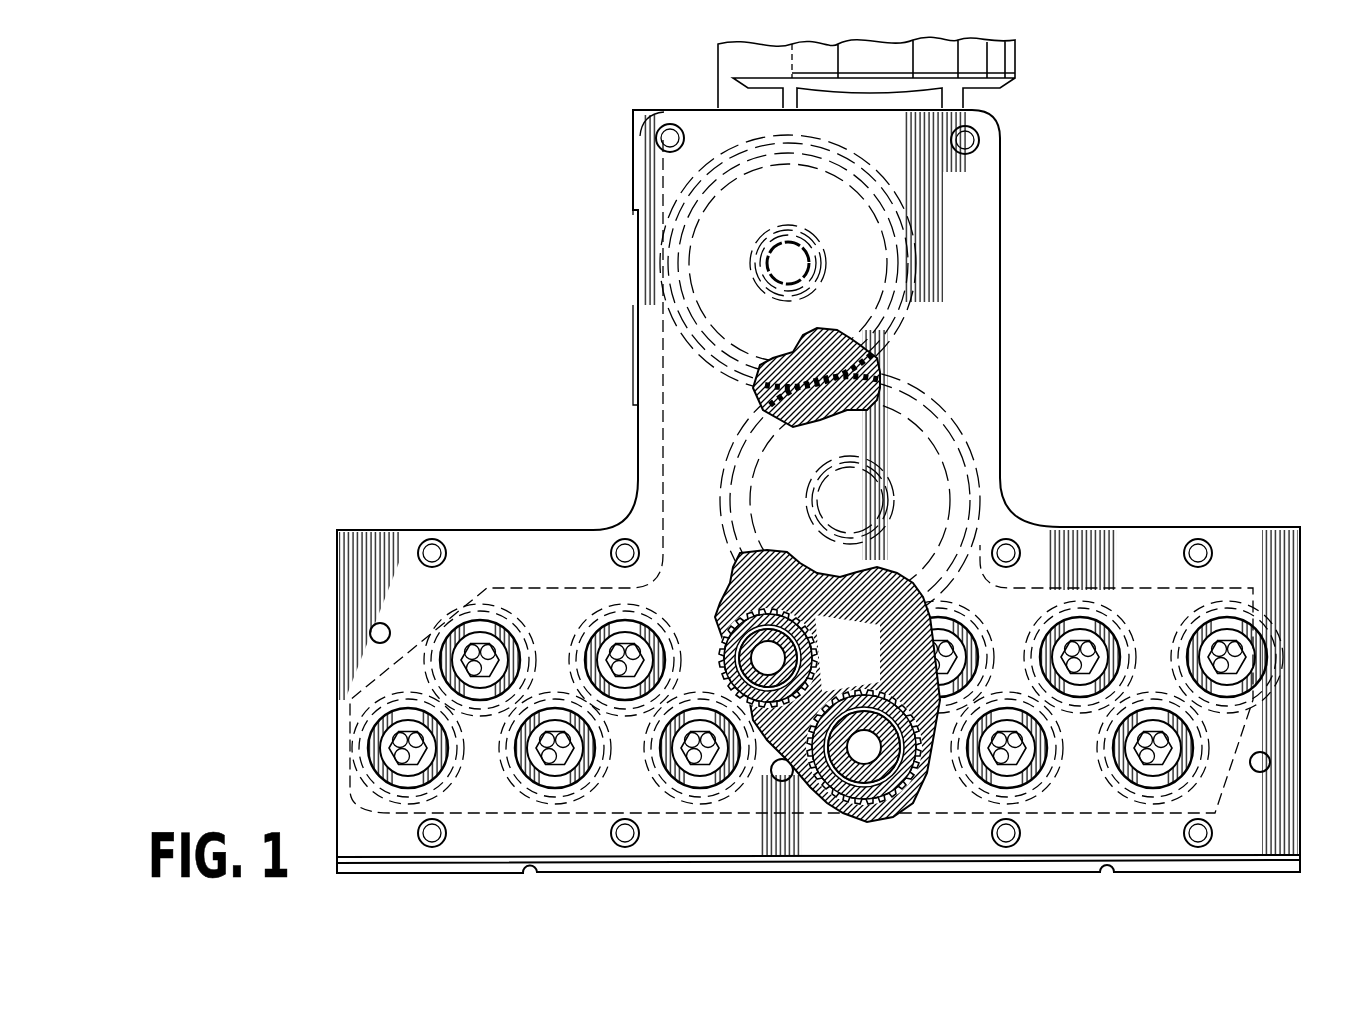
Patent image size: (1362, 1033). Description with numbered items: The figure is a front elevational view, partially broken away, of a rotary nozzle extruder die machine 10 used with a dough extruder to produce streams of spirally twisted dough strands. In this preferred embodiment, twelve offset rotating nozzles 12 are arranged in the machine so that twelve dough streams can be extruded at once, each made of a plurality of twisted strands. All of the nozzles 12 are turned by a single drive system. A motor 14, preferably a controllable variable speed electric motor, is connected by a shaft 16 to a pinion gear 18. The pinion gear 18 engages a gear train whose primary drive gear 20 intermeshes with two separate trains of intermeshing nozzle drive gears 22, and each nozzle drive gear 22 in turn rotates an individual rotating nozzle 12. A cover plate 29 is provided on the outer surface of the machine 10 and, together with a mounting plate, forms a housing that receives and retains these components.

The rotary nozzle extruder die machine 10 is at (1106, 366).
The rotating nozzle 12 is at (487, 648).
The motor 14 is at (1014, 63).
The shaft 16 is at (768, 262).
The pinion gear 18 is at (877, 368).
The primary drive gear 20 is at (877, 390).
The nozzle drive gear 22 is at (738, 600).
The cover plate 29 is at (1236, 540).